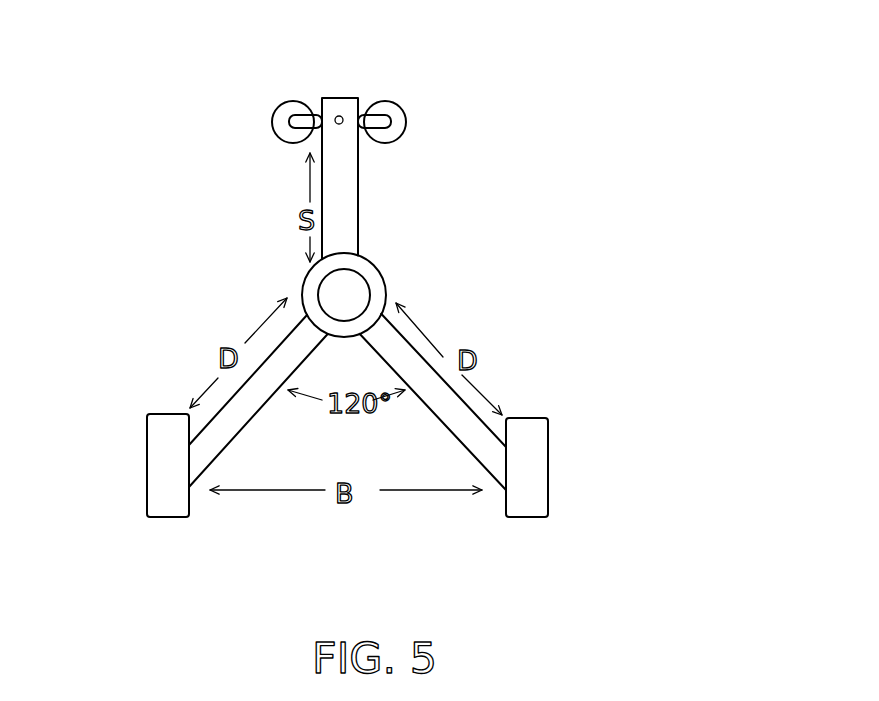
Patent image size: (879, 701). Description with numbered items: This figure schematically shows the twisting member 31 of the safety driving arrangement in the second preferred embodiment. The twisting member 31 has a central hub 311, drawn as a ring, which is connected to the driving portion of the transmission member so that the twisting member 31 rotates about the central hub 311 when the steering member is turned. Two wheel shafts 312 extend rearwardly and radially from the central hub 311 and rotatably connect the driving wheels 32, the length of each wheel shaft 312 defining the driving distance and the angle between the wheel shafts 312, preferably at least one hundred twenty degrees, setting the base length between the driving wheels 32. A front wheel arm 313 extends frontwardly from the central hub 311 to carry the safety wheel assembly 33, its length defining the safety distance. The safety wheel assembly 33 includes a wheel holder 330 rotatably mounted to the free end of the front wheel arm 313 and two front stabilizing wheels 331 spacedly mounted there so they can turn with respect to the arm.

The twisting member 31 is at (376, 350).
The central hub 311 is at (345, 303).
The wheel shaft 312 is at (487, 448).
The front wheel arm 313 is at (345, 224).
The driving wheel 32 is at (165, 450).
The safety wheel assembly 33 is at (369, 79).
The wheel holder 330 is at (338, 110).
The front stabilizing wheel 331 is at (296, 104).